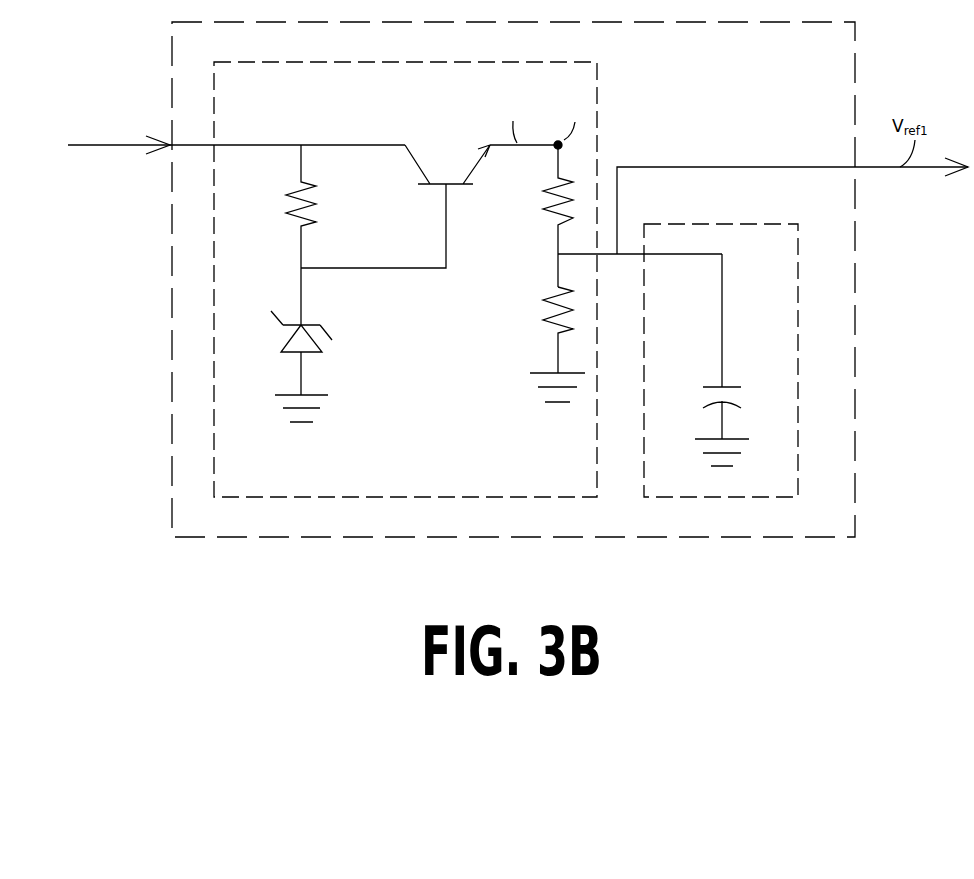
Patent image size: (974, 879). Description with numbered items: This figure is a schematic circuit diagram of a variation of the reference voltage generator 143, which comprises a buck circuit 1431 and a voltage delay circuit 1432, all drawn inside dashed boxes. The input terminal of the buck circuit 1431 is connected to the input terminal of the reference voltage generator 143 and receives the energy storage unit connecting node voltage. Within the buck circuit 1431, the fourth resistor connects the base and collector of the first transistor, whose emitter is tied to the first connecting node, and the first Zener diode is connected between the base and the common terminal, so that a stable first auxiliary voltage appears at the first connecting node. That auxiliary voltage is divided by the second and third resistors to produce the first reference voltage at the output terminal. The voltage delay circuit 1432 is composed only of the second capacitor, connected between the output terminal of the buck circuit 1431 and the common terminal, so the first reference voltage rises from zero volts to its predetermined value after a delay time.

The reference voltage generator 143 is at (855, 418).
The buck circuit 1431 is at (597, 140).
The voltage delay circuit 1432 is at (768, 224).